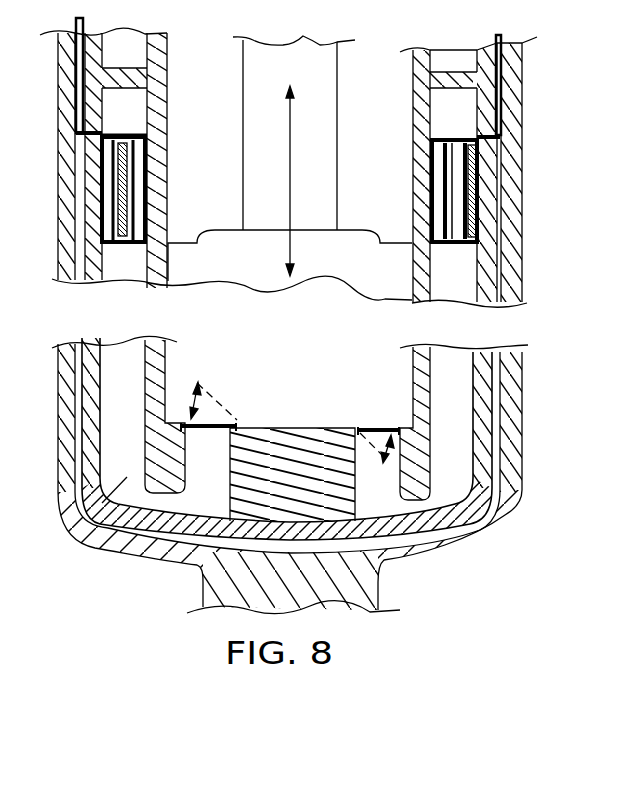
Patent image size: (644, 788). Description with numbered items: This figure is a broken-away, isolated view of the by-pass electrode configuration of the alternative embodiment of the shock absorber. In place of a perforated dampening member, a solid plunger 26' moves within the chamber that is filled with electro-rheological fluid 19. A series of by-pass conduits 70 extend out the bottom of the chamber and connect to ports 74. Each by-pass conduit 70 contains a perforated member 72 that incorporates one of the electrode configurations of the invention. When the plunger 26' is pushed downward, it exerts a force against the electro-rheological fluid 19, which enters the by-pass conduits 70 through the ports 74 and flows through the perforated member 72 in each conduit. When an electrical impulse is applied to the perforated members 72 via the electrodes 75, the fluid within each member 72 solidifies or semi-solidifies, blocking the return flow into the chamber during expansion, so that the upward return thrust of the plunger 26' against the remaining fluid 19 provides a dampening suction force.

The electro-rheological fluid 19 is at (137, 414).
The solid plunger 26' is at (374, 162).
The by-pass conduit 70 is at (108, 543).
The perforated member 72 is at (460, 184).
The port 74 is at (380, 427).
The electrode 75 is at (79, 30).